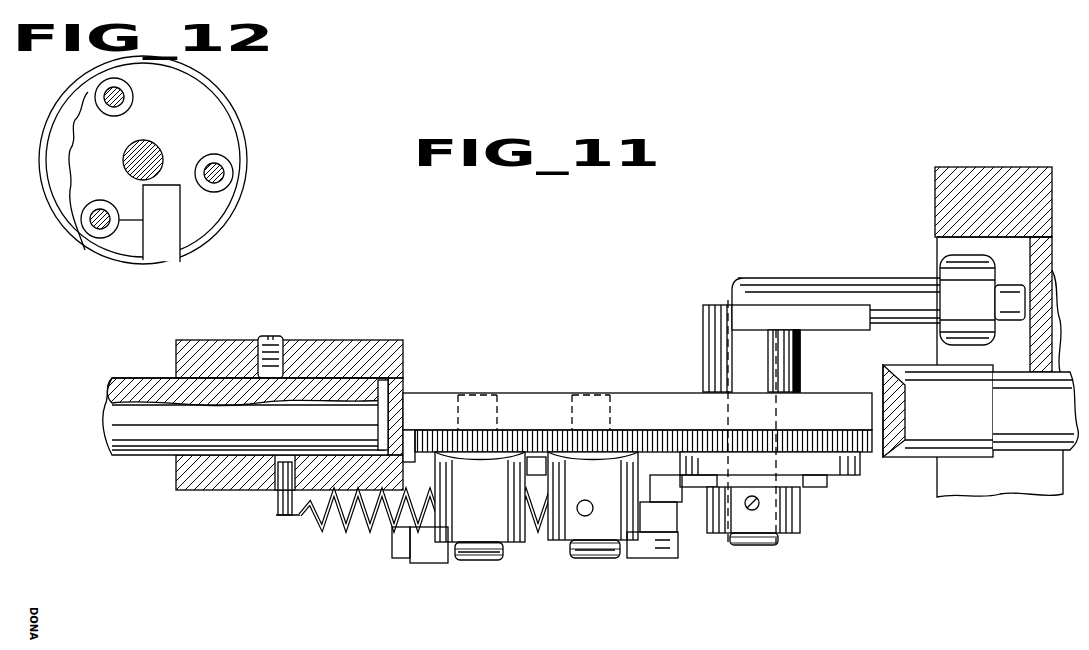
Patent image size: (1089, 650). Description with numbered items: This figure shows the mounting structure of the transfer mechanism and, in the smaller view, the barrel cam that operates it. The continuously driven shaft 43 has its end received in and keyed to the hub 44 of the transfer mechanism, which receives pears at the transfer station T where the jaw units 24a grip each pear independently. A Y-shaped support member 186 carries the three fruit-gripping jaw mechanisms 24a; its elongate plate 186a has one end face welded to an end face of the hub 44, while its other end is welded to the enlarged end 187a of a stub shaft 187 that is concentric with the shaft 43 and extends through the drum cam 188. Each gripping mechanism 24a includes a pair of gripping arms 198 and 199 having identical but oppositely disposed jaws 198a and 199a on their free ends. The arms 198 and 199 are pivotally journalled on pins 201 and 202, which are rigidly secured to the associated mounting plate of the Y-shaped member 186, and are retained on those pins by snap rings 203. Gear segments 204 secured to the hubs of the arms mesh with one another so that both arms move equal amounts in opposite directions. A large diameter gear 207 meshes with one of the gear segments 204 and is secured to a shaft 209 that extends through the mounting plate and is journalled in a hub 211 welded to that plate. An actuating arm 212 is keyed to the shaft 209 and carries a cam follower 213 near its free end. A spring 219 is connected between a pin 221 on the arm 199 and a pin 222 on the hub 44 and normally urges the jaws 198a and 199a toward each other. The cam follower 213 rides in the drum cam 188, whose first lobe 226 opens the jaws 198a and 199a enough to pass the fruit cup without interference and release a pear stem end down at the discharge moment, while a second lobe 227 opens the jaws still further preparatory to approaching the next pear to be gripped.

In FIG. 11, the shaft 43 is at (112, 394).
In FIG. 11, the hub 44 is at (216, 353).
In FIG. 11, the Y-shaped support member 186 is at (650, 393).
In FIG. 11, the elongate plate 186a is at (558, 393).
In FIG. 12, the stub shaft 187 is at (150, 160).
In FIG. 11, the stub shaft 187 is at (1045, 408).
In FIG. 11, the enlarged end 187a is at (975, 408).
In FIG. 12, the drum cam 188 is at (236, 118).
In FIG. 11, the drum cam 188 is at (965, 198).
In FIG. 11, the gripping arm 198 is at (474, 474).
In FIG. 11, the jaw 198a is at (645, 562).
In FIG. 11, the gripping arm 199 is at (612, 470).
In FIG. 11, the jaw 199a is at (426, 563).
In FIG. 11, the pin 201 is at (490, 560).
In FIG. 11, the pin 202 is at (590, 563).
In FIG. 11, the snap ring 203 is at (506, 543).
In FIG. 11, the gear segment 204 is at (600, 440).
In FIG. 11, the large diameter gear 207 is at (802, 440).
In FIG. 11, the shaft 209 is at (768, 546).
In FIG. 11, the hub 211 is at (788, 354).
In FIG. 12, the actuating arm 212 is at (100, 210).
In FIG. 11, the actuating arm 212 is at (833, 282).
In FIG. 12, the cam follower 213 is at (108, 232).
In FIG. 11, the cam follower 213 is at (985, 303).
In FIG. 11, the spring 219 is at (336, 526).
In FIG. 11, the pin 221 is at (585, 499).
In FIG. 11, the pin 222 is at (283, 495).
In FIG. 12, the first lobe 226 is at (93, 108).
In FIG. 12, the second lobe 227 is at (88, 135).
In FIG. 11, the jaw unit 24a is at (618, 566).
In FIG. 11, the transfer station T is at (380, 553).